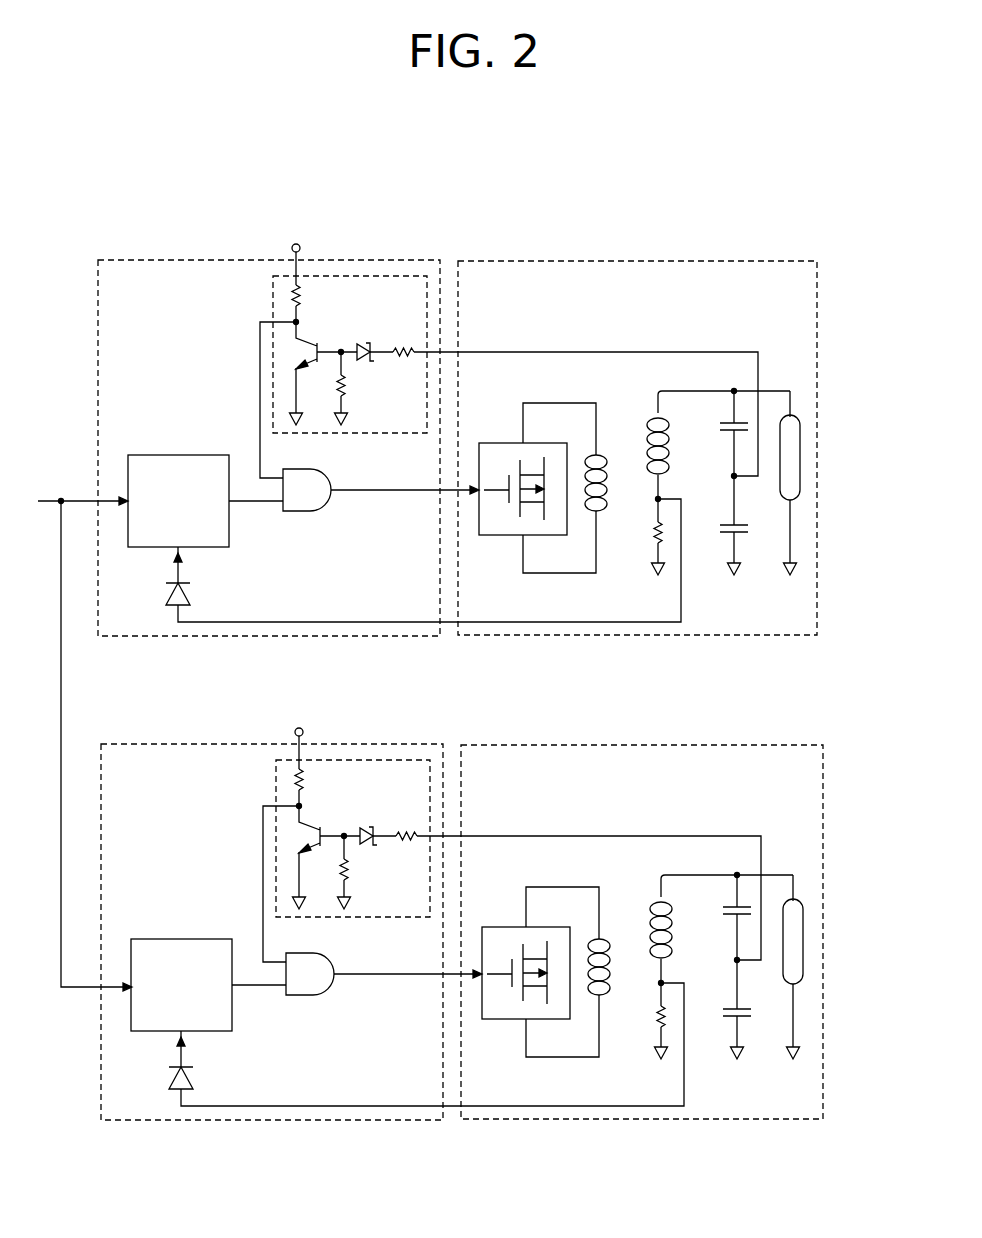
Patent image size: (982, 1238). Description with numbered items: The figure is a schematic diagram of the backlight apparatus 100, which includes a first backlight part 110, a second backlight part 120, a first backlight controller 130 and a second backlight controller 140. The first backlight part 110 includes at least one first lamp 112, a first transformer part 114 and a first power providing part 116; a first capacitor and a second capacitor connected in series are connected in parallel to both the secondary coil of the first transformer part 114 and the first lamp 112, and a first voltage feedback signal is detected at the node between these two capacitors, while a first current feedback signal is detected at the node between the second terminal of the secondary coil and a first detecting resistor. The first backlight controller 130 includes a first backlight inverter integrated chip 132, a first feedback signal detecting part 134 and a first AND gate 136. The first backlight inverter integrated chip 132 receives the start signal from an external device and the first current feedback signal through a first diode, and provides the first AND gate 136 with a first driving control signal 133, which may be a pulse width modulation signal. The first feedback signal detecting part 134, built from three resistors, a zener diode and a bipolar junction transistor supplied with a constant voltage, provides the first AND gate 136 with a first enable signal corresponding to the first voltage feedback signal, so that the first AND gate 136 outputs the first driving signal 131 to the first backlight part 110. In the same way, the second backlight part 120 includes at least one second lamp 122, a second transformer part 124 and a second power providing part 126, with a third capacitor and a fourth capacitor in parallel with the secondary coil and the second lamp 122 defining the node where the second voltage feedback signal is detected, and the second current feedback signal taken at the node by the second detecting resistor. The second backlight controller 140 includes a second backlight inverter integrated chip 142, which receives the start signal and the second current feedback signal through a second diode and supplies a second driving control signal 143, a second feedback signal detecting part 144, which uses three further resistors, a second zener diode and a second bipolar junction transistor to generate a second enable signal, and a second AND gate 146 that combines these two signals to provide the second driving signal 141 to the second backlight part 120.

The backlight apparatus 100 is at (479, 148).
The first backlight part 110 is at (636, 261).
The first lamp 112 is at (800, 458).
The first transformer part 114 is at (612, 432).
The first power providing part 116 is at (490, 441).
The second backlight part 120 is at (669, 902).
The second lamp 122 is at (830, 967).
The second transformer part 124 is at (659, 962).
The second power providing part 126 is at (524, 943).
The first backlight controller 130 is at (375, 260).
The first driving signal 131 is at (405, 492).
The first backlight inverter integrated chip 132 is at (178, 455).
The first driving control signal 133 is at (257, 503).
The first feedback signal detecting part 134 is at (405, 276).
The first AND gate 136 is at (300, 511).
The second backlight controller 140 is at (431, 902).
The second driving signal 141 is at (408, 1007).
The second backlight inverter IC 142 is at (181, 955).
The second driving control signal 143 is at (259, 1021).
The second feedback signal detecting part 144 is at (365, 801).
The second AND gate 146 is at (310, 1005).